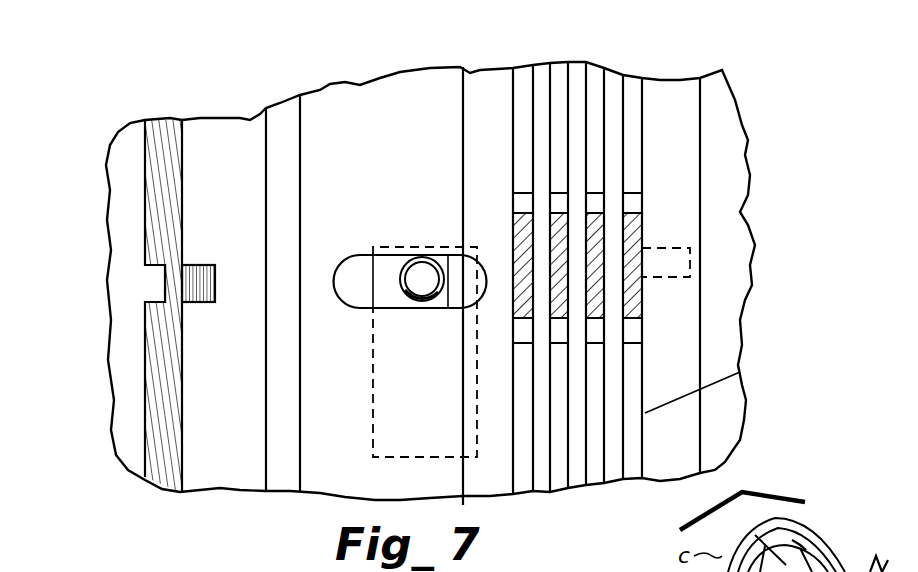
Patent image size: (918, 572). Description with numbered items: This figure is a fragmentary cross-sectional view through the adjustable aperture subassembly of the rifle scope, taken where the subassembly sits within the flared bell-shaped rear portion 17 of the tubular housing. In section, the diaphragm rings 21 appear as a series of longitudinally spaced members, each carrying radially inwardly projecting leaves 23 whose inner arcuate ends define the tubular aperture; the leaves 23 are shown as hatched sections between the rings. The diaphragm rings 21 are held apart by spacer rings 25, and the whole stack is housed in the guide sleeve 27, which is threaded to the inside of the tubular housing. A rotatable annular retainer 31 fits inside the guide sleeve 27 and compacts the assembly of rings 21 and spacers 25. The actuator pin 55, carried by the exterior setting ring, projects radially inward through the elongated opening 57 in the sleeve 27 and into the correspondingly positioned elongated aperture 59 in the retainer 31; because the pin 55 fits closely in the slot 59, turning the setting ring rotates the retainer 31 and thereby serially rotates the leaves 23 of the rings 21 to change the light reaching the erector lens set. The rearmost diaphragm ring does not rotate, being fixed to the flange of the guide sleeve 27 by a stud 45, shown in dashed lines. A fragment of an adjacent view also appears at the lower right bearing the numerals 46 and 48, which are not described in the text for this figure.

The flared bell-shaped rear portion 17 is at (725, 425).
The diaphragm ring 21 is at (523, 140).
The leaf 23 is at (641, 217).
The spacer ring 25 is at (544, 79).
The guide sleeve 27 is at (690, 352).
The retainer 31 is at (742, 369).
The stud 45 is at (690, 248).
The arm 46 is at (800, 540).
The roller 48 is at (850, 571).
The actuator pin 55 is at (421, 278).
The elongated opening 57 is at (380, 433).
The elongated aperture 59 is at (345, 290).